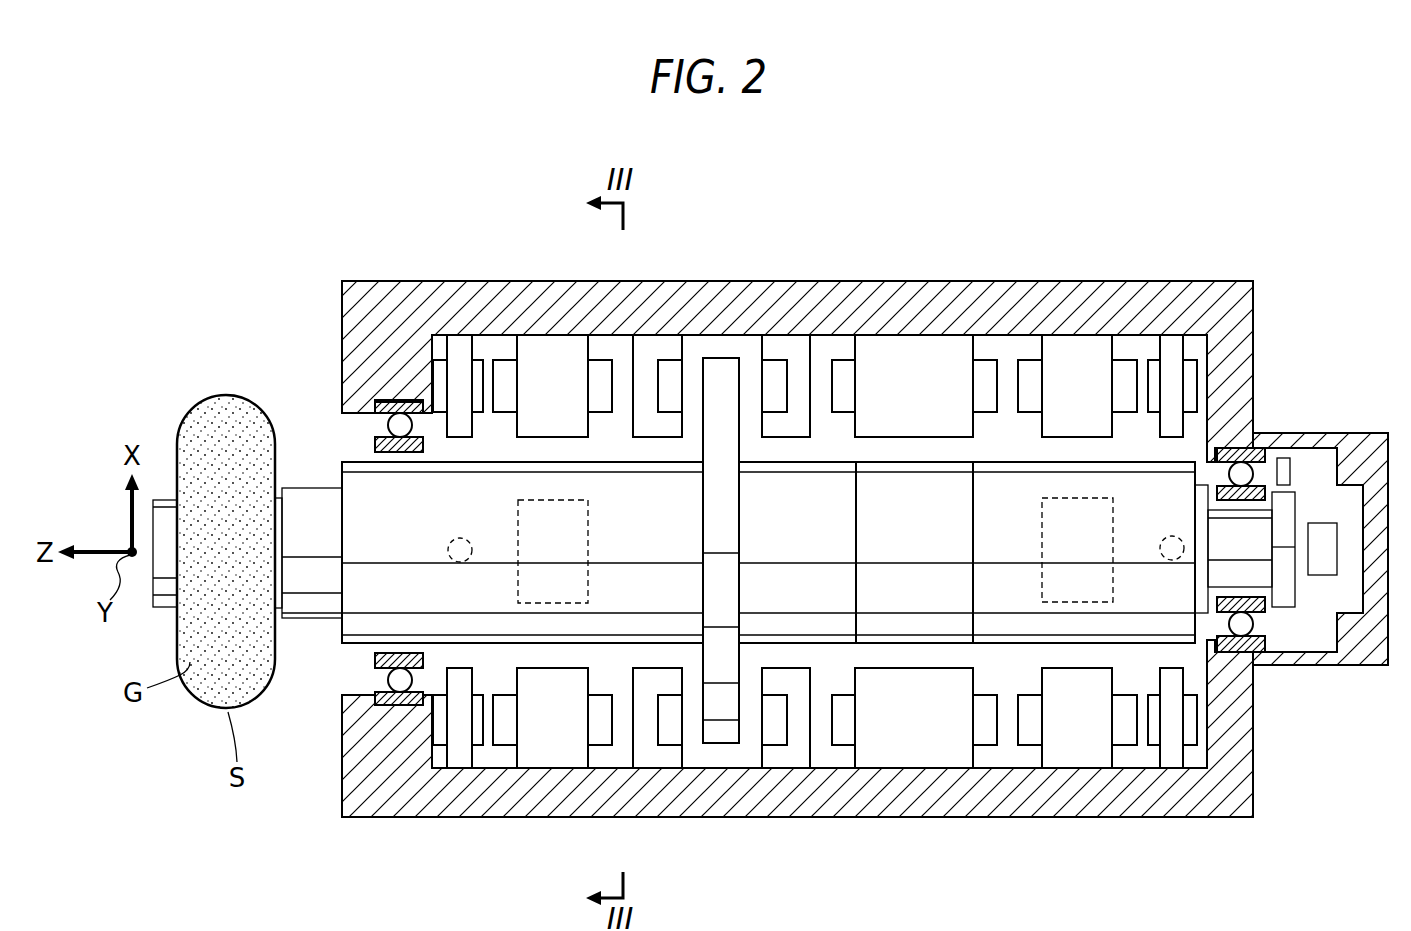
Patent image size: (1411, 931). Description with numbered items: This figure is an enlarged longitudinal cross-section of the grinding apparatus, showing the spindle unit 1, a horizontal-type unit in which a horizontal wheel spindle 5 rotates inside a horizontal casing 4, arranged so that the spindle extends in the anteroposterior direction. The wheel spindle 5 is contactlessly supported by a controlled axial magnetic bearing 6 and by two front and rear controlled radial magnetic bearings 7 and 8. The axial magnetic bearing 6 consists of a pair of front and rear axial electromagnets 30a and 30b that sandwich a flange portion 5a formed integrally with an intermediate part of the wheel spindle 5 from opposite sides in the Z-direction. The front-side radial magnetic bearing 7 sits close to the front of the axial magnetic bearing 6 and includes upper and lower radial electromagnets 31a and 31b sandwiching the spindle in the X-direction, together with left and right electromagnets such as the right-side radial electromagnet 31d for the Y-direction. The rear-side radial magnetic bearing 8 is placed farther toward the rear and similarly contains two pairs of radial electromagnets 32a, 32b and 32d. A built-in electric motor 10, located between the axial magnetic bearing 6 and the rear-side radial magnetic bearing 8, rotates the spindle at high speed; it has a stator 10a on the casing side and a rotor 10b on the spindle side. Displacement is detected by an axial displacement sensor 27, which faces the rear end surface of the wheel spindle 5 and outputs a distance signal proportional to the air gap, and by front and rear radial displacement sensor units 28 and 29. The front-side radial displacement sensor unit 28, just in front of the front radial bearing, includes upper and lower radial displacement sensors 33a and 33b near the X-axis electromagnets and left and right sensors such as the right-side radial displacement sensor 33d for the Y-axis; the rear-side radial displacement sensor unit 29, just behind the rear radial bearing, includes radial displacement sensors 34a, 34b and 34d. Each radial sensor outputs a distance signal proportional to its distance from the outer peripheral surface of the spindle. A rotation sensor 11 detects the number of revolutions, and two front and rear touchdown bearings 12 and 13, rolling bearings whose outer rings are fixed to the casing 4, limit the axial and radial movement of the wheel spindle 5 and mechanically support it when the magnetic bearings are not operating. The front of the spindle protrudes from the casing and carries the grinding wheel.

The spindle unit 1 is at (1238, 248).
The casing 4 is at (862, 292).
The wheel spindle 5 is at (1007, 462).
The flange portion 5a is at (725, 727).
The axial magnetic bearing 6 is at (800, 342).
The front-side radial magnetic bearing 7 is at (577, 340).
The rear-side radial magnetic bearing 8 is at (1098, 342).
The electric motor 10 is at (917, 342).
The stator 10a is at (912, 763).
The rotor 10b is at (885, 523).
The rotation sensor 11 is at (1303, 470).
The front touchdown bearing 12 is at (395, 707).
The rear touchdown bearing 13 is at (1255, 447).
The axial displacement sensor 27 is at (1318, 563).
The front-side radial displacement sensor unit 28 is at (463, 765).
The rear-side radial displacement sensor unit 29 is at (1167, 765).
The front axial electromagnet 30a is at (668, 342).
The rear axial electromagnet 30b is at (772, 342).
The upper radial electromagnet 31a is at (532, 342).
The lower radial electromagnet 31b is at (535, 763).
The right-side radial electromagnet 31d is at (588, 553).
The radial electromagnet 32a is at (1055, 342).
The radial electromagnet 32b is at (1098, 765).
The radial electromagnet 32d is at (1040, 548).
The upper radial displacement sensor 33a is at (453, 342).
The lower radial displacement sensor 33b is at (463, 765).
The right-side radial displacement sensor 33d is at (450, 548).
The radial displacement sensor 34a is at (1172, 342).
The radial displacement sensor 34b is at (1178, 765).
The radial displacement sensor 34d is at (1165, 548).